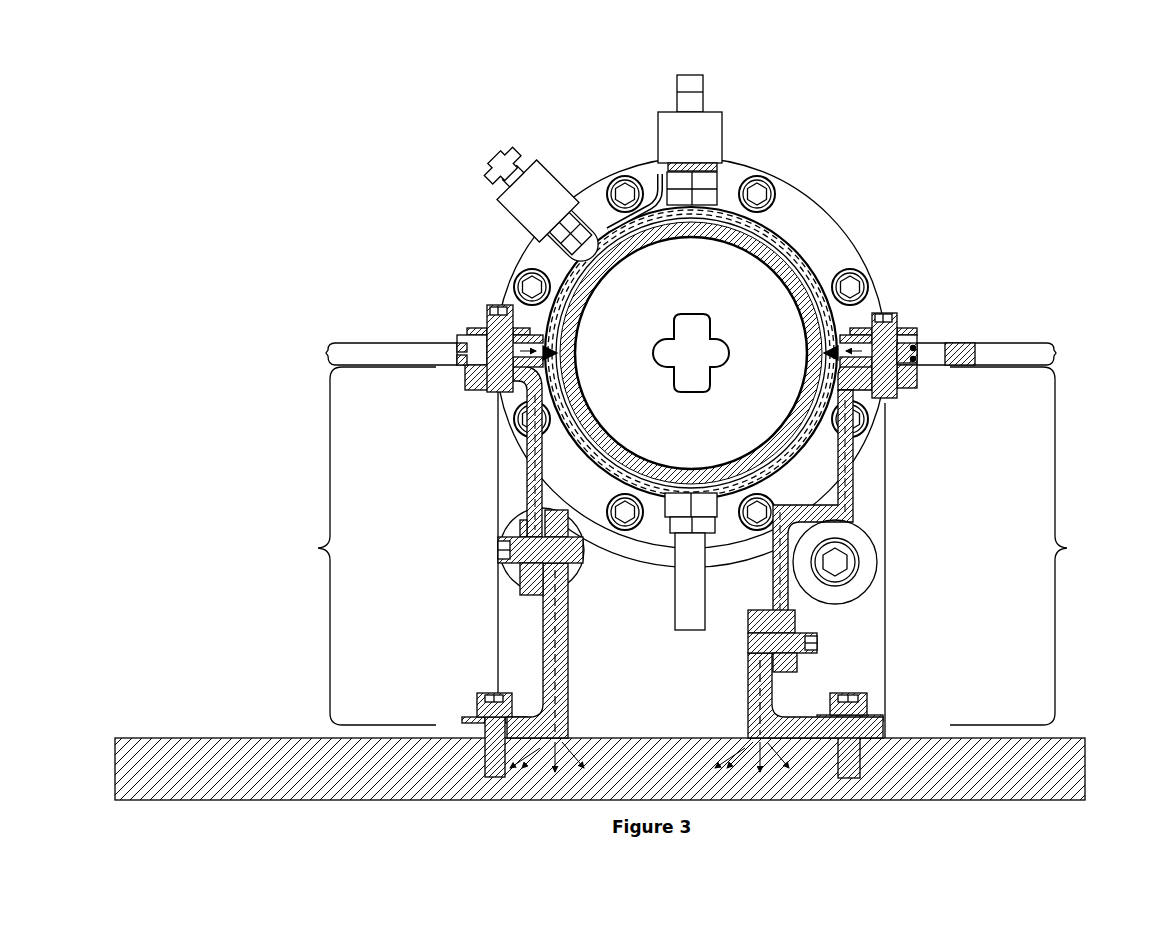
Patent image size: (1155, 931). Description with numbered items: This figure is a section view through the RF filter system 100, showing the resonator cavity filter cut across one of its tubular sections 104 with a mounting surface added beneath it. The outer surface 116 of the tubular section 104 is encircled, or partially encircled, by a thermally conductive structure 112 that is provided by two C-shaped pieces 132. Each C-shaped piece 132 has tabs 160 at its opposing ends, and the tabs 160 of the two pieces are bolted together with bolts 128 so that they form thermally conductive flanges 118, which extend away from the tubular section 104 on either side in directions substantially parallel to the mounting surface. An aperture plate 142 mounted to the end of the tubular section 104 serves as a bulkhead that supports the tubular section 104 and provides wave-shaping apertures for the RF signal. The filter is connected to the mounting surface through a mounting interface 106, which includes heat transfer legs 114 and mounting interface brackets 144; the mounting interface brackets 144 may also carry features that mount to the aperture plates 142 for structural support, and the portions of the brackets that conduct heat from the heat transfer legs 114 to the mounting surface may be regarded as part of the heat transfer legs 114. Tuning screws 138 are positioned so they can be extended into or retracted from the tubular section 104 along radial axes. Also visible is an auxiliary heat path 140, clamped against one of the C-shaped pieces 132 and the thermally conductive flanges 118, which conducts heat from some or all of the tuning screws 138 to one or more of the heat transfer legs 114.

The RF filter system 100 is at (1056, 128).
The tubular section 104 is at (690, 282).
The mounting interface 106 is at (696, 546).
The thermally conductive structure 112 is at (778, 210).
The heat transfer leg 114 is at (533, 455).
The outer surface 116 is at (513, 392).
The thermally conductive flange 118 is at (694, 353).
The bolt 128 is at (487, 306).
The C-shaped piece 132 is at (691, 353).
The tuning screw 138 is at (688, 130).
The auxiliary heat path 140 is at (607, 228).
The aperture plate 142 is at (798, 298).
The mounting interface bracket 144 is at (555, 657).
The tab 160 is at (458, 337).